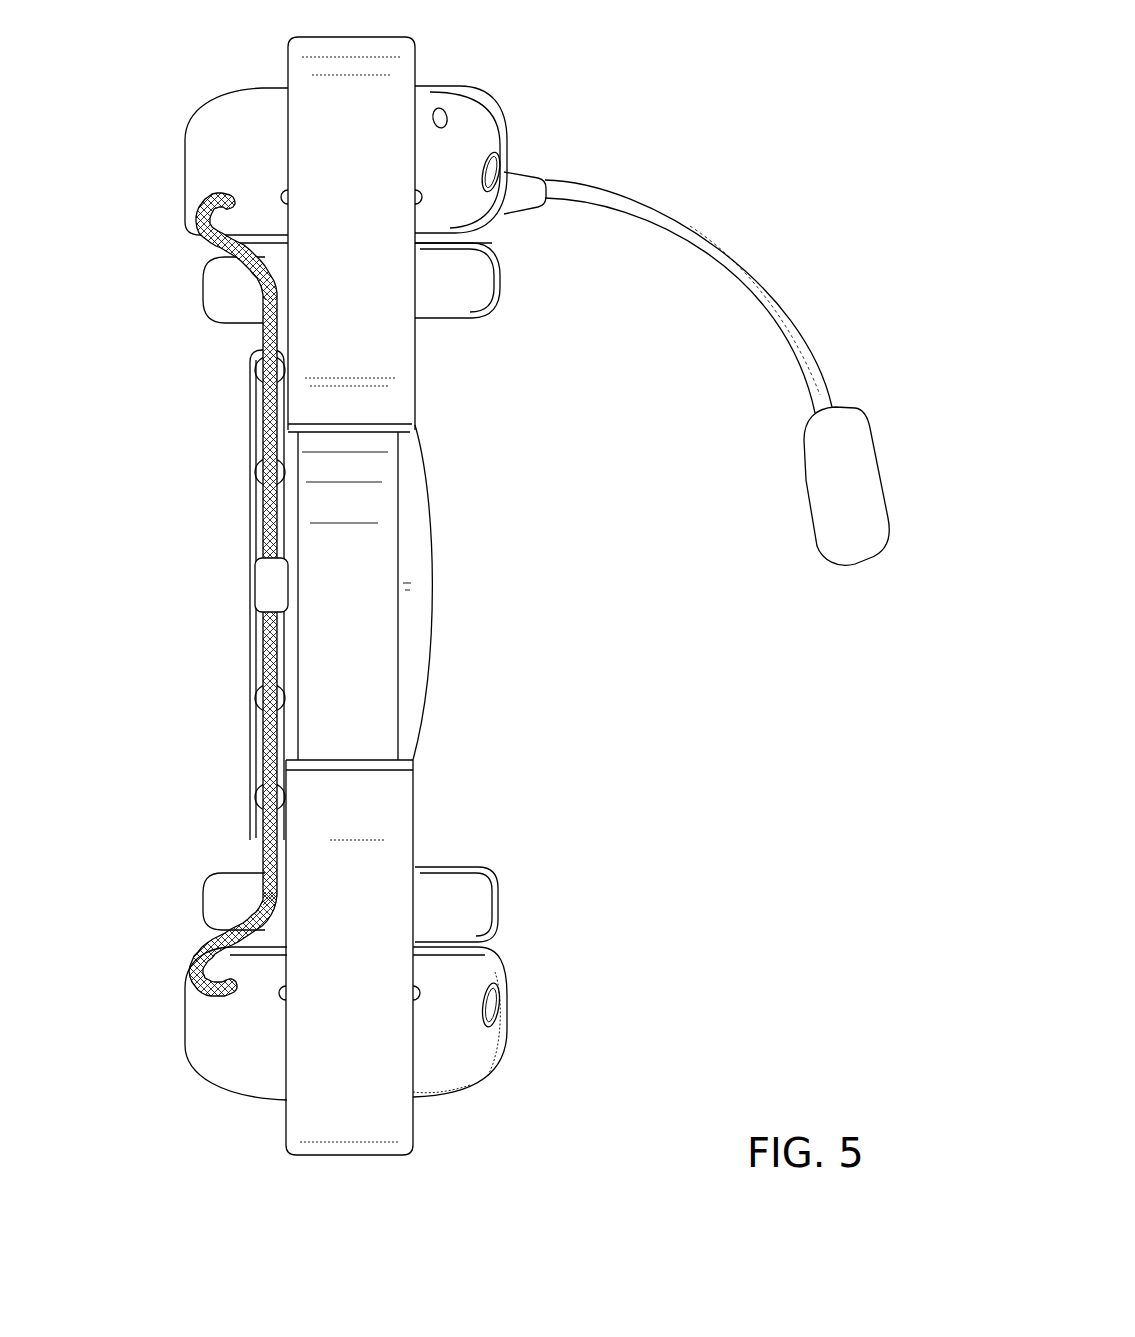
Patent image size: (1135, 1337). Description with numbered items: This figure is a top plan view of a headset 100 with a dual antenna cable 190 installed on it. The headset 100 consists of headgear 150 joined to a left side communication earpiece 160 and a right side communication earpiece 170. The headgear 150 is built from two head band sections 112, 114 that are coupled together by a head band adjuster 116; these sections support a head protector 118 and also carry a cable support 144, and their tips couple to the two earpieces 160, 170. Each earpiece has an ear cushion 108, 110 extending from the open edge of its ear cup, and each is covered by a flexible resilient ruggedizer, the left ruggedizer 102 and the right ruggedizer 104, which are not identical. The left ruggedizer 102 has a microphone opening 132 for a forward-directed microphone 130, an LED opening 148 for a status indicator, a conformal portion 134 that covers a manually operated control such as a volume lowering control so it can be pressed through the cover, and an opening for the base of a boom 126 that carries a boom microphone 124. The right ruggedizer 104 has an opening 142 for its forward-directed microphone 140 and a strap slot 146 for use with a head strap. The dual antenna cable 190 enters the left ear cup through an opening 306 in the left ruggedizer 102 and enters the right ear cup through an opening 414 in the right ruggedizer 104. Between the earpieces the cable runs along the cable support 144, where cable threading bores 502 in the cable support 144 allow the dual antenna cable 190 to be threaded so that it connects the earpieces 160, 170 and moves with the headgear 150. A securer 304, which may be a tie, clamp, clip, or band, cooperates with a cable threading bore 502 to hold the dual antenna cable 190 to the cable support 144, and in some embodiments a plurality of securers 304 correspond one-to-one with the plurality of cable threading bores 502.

The headset 100 is at (795, 59).
The left ruggedizer 102 is at (240, 133).
The right ruggedizer 104 is at (470, 1070).
The ear cushion 108 is at (455, 272).
The ear cushion 110 is at (475, 915).
The head band section 112 is at (378, 117).
The head band section 114 is at (385, 905).
The head band adjuster 116 is at (350, 650).
The head protector 118 is at (413, 540).
The boom microphone 124 is at (815, 470).
The boom 126 is at (620, 192).
The forward-directed microphone 130 is at (525, 175).
The microphone opening 132 is at (497, 148).
The conformal portion 134 is at (277, 195).
The forward-directed microphone 140 is at (488, 1015).
The opening 142 is at (492, 978).
The cable support 144 is at (252, 540).
The strap slot 146 is at (420, 995).
The LED opening 148 is at (445, 110).
The headgear 150 is at (160, 619).
The left side communication earpiece 160 is at (160, 128).
The right side communication earpiece 170 is at (160, 1017).
The dual antenna cable 190 is at (270, 425).
The securer 304 is at (264, 596).
The opening 306 is at (228, 197).
The opening 414 is at (228, 992).
The cable threading bore 502 is at (254, 372).